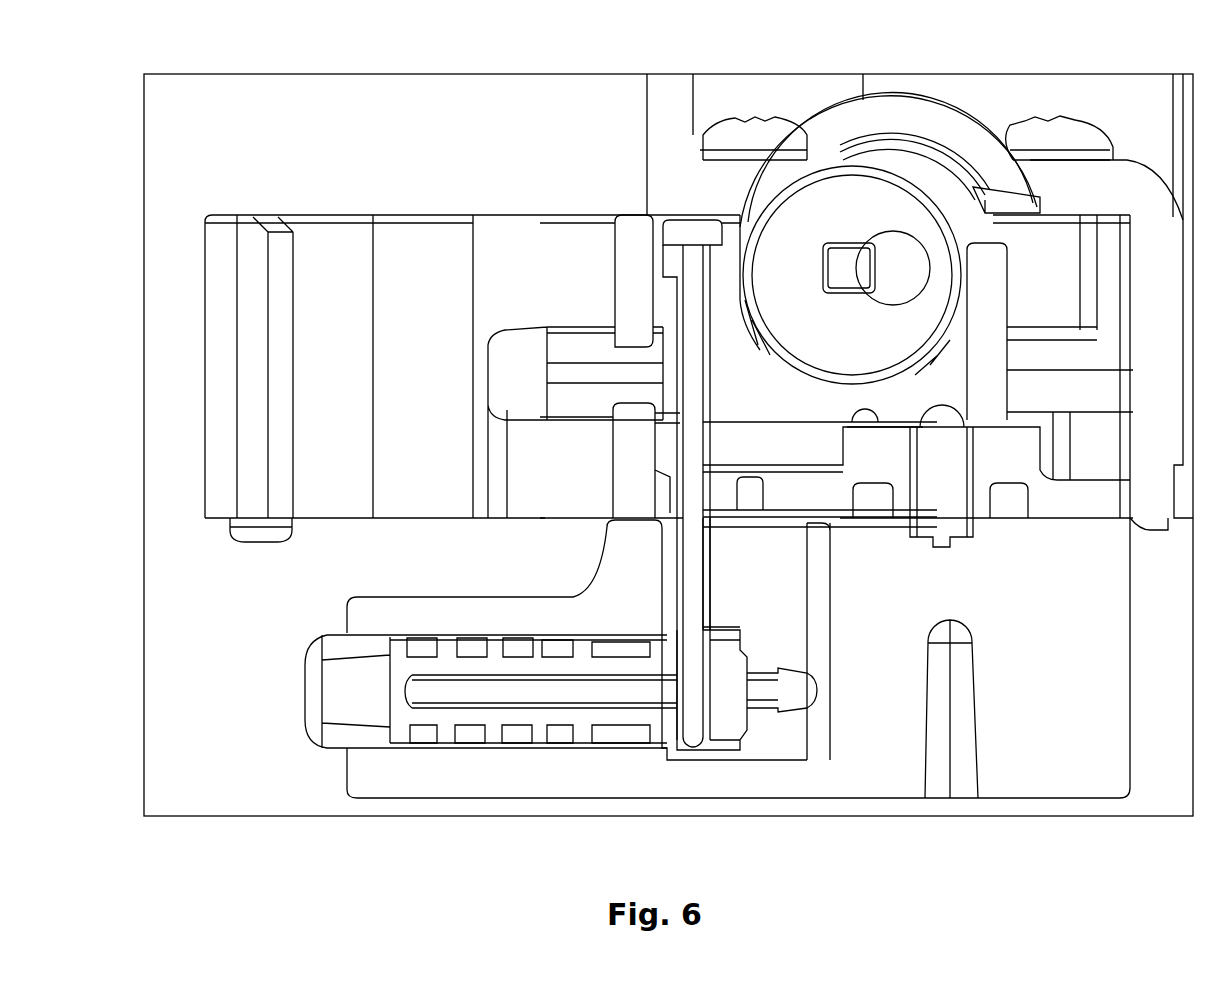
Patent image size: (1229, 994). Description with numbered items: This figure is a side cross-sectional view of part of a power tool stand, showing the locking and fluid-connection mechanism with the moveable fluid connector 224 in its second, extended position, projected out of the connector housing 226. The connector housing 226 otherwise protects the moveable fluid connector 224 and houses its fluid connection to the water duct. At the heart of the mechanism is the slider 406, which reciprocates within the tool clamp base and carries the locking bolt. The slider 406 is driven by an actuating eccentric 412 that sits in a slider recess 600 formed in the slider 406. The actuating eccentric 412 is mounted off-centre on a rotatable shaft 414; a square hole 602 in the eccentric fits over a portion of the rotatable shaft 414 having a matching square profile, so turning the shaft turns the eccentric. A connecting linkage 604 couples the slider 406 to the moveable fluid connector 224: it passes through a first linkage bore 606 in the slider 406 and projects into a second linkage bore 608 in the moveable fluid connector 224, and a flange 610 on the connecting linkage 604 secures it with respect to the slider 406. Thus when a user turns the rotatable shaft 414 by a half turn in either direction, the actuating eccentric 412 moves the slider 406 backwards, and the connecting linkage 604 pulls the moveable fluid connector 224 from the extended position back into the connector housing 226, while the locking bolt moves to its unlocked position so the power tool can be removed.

The slider recess 600 is at (747, 313).
The square hole 602 is at (840, 242).
The connecting linkage 604 is at (683, 542).
The first linkage bore 606 is at (680, 295).
The second linkage bore 608 is at (677, 750).
The flange 610 is at (667, 233).
The slider 406 is at (980, 355).
The actuating eccentric 412 is at (940, 202).
The rotatable shaft 414 is at (910, 233).
The moveable fluid connector 224 is at (313, 727).
The connector housing 226 is at (853, 773).